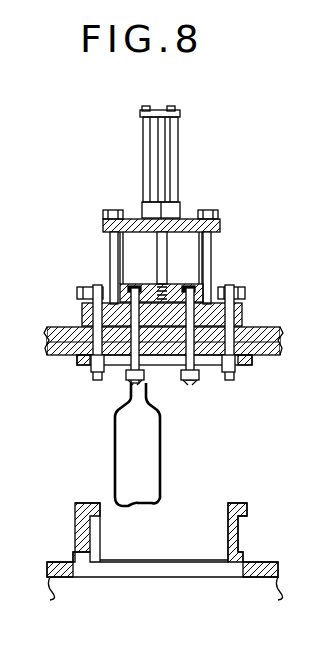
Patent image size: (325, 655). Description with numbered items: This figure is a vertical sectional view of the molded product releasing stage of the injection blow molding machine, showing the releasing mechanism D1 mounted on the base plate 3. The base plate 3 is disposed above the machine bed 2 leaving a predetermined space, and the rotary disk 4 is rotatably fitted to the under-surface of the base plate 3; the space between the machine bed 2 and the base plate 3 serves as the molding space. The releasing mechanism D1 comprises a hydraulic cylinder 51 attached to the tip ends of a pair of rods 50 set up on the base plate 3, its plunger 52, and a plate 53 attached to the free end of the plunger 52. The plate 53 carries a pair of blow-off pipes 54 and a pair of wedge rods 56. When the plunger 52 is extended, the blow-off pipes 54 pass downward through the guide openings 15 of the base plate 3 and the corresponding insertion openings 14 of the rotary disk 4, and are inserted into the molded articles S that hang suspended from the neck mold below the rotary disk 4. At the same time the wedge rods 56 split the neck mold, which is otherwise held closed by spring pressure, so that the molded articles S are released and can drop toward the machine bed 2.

The releasing mechanism D1 is at (184, 160).
The hydraulic cylinder 51 is at (158, 152).
The rods 50 is at (110, 250).
The plunger 52 is at (158, 267).
The plate 53 is at (174, 287).
The guide openings 15 is at (247, 320).
The base plate 3 is at (58, 330).
The rotary disk 4 is at (54, 357).
The wedge rods 56 is at (97, 383).
The blow-off pipes 54 is at (150, 364).
The insertion openings 14 is at (206, 360).
The molded articles S is at (115, 463).
The machine bed 2 is at (75, 580).